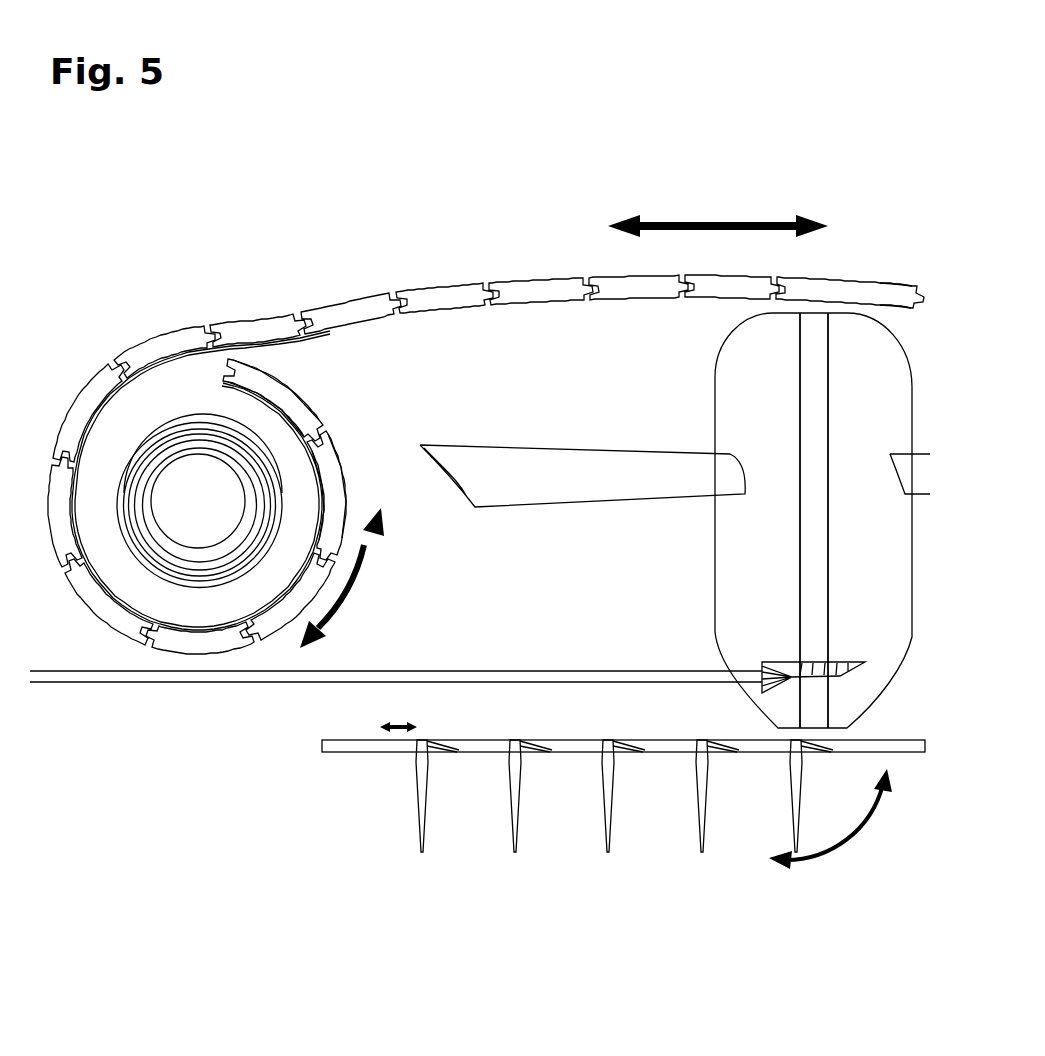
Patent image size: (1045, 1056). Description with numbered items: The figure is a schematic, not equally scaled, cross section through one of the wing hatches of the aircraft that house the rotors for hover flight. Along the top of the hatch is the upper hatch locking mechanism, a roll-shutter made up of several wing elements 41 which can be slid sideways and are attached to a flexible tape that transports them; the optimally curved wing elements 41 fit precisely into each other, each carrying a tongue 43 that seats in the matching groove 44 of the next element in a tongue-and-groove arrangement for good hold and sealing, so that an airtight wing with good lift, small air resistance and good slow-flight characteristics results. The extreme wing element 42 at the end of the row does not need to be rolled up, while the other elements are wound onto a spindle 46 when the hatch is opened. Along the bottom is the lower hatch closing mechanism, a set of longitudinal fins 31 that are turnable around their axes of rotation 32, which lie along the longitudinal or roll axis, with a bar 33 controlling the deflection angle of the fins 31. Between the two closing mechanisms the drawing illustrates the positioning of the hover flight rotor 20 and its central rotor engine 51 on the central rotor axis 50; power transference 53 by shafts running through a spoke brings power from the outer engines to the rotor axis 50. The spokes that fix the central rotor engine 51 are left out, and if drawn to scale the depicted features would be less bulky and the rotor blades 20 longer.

The rotor 20 is at (893, 448).
The longitudinal fin 31 is at (702, 818).
The axis of rotation of the longitudinal fin 32 is at (418, 770).
The bar to control the deflection angle of the longitudinal fins 33 is at (467, 753).
The wing element 41 is at (538, 280).
The extreme wing element 42 is at (843, 282).
The tongue 43 is at (315, 427).
The groove 44 is at (330, 452).
The spindle 46 is at (193, 454).
The central rotor axis 50 is at (799, 382).
The central rotor engine 51 is at (742, 415).
The power transference by shafts 53 is at (540, 680).